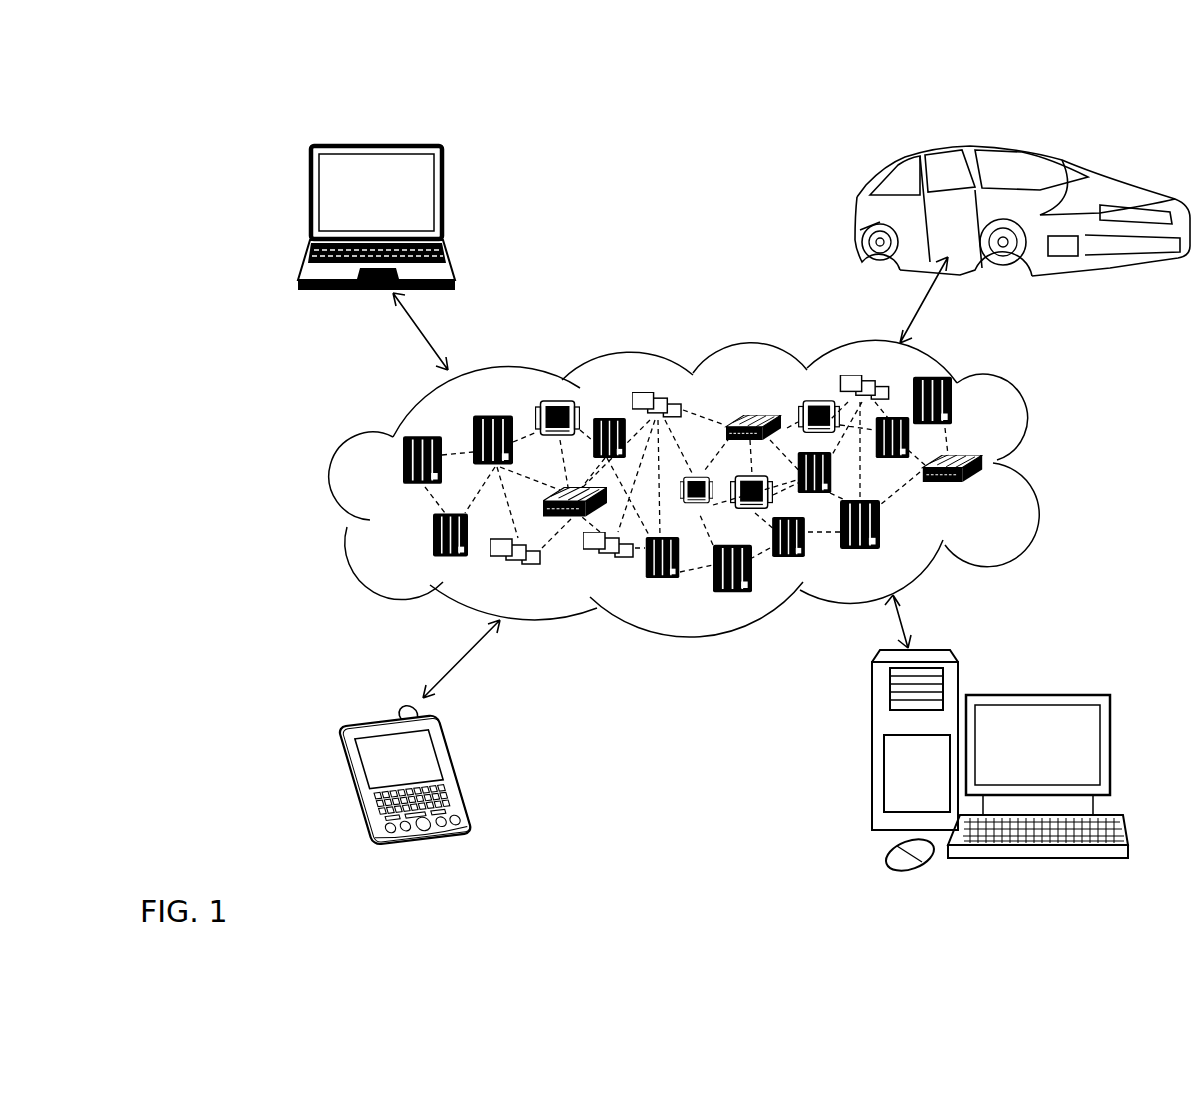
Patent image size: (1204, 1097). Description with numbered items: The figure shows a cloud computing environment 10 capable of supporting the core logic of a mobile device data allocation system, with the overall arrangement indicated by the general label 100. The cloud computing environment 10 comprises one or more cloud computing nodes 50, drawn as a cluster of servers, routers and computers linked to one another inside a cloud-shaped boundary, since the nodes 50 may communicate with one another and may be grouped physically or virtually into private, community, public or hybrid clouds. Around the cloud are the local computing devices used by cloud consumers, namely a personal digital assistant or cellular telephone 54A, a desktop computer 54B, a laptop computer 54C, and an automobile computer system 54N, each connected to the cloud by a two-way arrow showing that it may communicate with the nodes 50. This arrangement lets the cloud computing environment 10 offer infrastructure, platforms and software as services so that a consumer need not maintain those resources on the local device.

The cloud computing system 100 is at (647, 90).
The cloud computing environment 10 is at (1042, 463).
The cloud computing nodes 50 is at (985, 492).
The personal digital assistant (PDA) or cellular telephone 54A is at (456, 771).
The desktop computer 54B is at (1035, 695).
The laptop computer 54C is at (445, 198).
The automobile computer system 54N is at (862, 213).